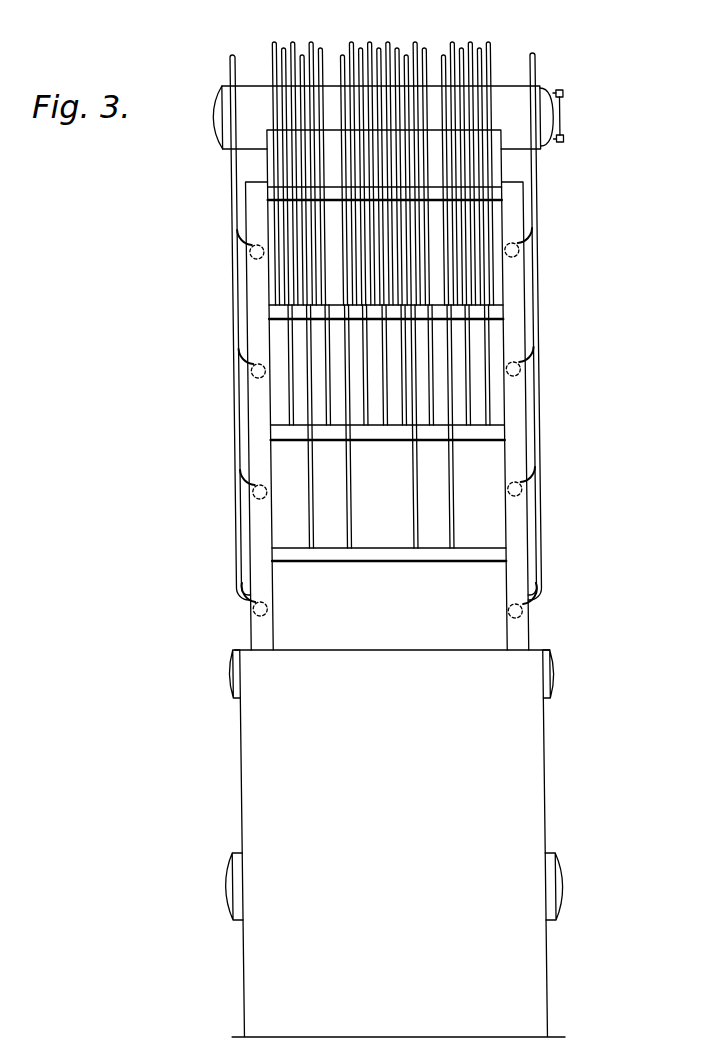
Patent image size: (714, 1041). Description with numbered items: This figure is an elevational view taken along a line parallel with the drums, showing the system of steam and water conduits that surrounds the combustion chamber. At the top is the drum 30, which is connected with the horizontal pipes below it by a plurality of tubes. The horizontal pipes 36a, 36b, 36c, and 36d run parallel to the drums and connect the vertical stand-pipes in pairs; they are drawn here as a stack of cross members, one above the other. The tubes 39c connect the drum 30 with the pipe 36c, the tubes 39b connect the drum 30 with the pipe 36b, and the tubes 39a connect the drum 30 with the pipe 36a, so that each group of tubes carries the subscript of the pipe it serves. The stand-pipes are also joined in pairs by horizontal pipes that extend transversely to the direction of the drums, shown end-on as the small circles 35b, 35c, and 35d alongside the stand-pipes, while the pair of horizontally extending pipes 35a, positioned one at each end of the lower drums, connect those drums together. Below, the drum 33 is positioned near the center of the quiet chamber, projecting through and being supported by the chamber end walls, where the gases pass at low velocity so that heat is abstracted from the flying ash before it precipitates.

The drum 30 is at (510, 94).
The drum 33 is at (563, 901).
The horizontally extending pipe 35a is at (528, 612).
The horizontal pipe 35b is at (527, 493).
The horizontal pipe 35c is at (526, 369).
The horizontal pipe 35d is at (526, 246).
The horizontal pipe 36a is at (392, 554).
The horizontal pipe 36b is at (382, 432).
The horizontal pipe 36c is at (270, 315).
The horizontal pipe 36d is at (268, 193).
The tube 39a is at (412, 518).
The tube 39b is at (490, 413).
The tube 39c is at (420, 288).